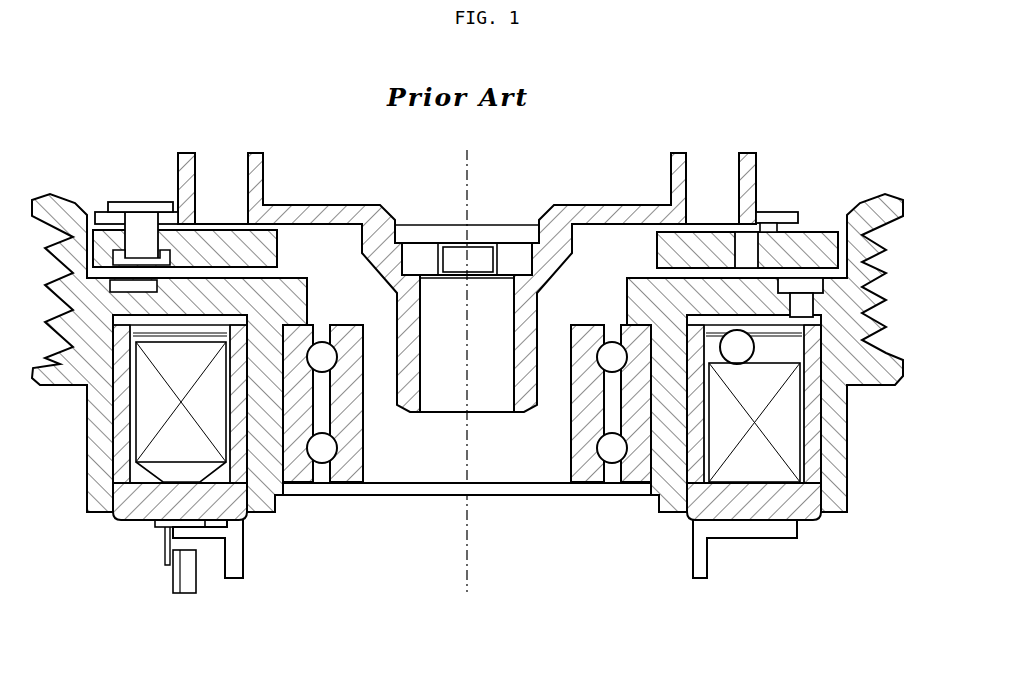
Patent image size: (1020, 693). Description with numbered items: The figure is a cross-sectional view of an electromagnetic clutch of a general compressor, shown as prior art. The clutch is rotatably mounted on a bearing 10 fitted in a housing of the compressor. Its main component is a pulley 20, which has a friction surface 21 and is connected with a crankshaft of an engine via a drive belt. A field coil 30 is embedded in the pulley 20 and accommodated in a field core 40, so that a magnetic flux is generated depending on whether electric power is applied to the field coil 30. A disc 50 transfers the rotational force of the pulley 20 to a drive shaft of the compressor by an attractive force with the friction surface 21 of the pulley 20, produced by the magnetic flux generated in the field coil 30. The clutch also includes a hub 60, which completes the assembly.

The bearing 10 is at (587, 470).
The pulley 20 is at (833, 462).
The friction surface 21 is at (725, 273).
The field coil 30 is at (743, 467).
The field core 40 is at (795, 503).
The disc 50 is at (809, 253).
The hub 60 is at (410, 400).